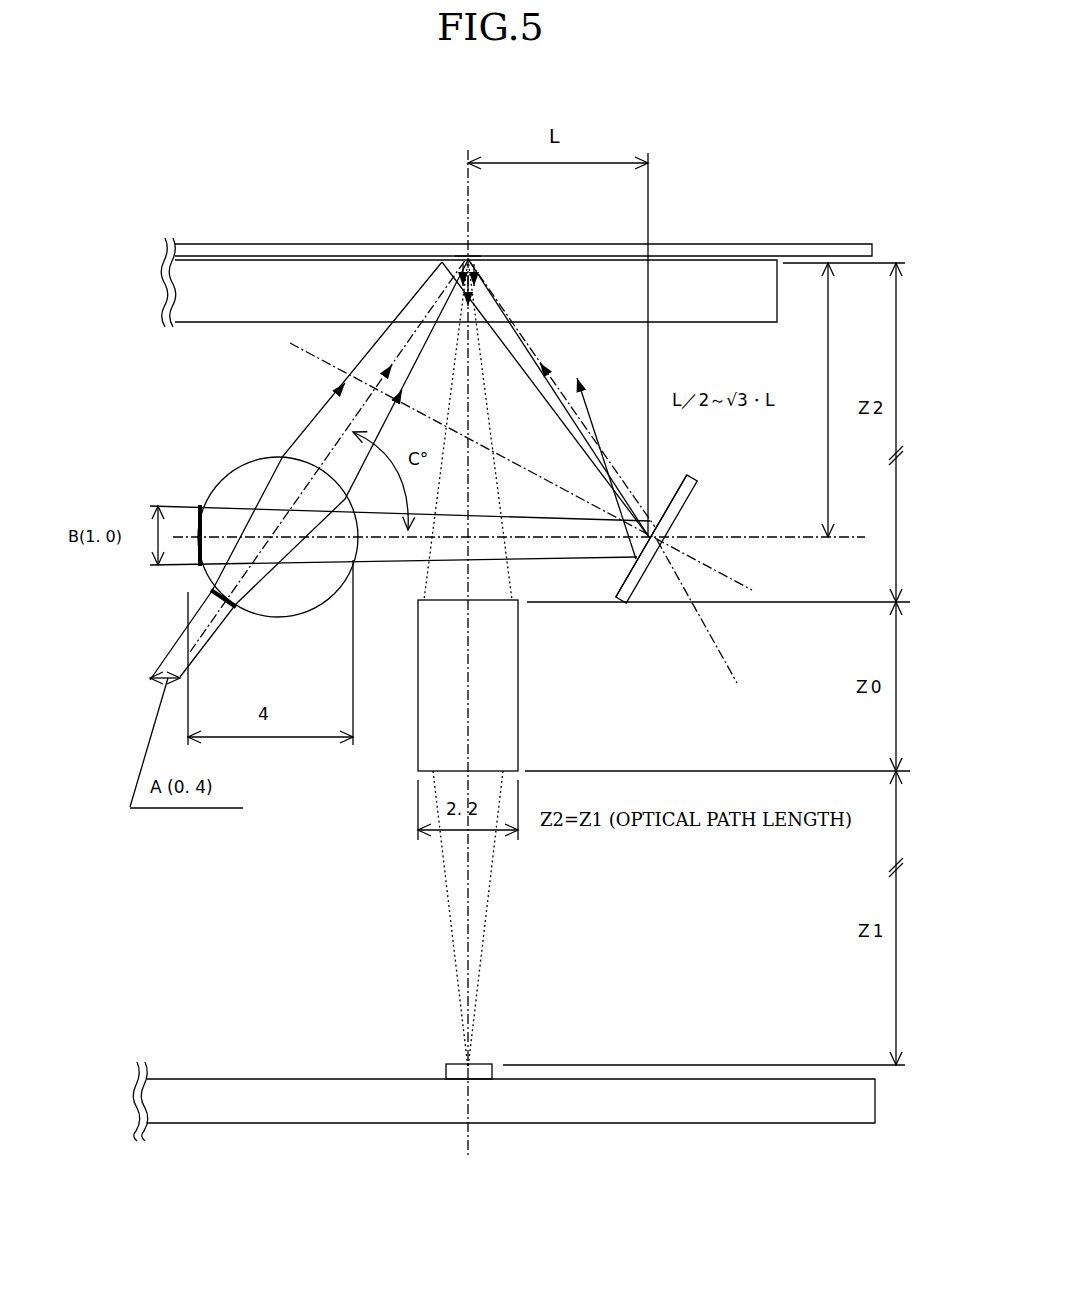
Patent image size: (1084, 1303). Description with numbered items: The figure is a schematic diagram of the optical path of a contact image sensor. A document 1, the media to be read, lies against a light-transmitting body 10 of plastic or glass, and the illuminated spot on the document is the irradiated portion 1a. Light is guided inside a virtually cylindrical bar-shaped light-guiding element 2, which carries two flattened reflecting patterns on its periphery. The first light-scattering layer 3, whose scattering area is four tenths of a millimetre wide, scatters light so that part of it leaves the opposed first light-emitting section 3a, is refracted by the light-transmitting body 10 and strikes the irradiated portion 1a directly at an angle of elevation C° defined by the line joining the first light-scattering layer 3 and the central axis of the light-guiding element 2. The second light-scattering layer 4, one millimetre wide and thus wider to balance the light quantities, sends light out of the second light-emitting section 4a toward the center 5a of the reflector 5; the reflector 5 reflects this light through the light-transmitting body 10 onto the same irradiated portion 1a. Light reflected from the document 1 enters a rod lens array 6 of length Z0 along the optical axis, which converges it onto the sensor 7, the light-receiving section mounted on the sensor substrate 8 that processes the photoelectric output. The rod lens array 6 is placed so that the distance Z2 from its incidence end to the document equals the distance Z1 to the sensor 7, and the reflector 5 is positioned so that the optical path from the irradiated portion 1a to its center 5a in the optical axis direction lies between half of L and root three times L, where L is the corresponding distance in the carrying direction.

The document 1 is at (763, 245).
The irradiated portion 1a is at (462, 257).
The light-transmitting body 10 is at (663, 282).
The light-guiding element 2 is at (260, 457).
The first light-scattering layer 3 is at (210, 598).
The first light-emitting section 3a is at (318, 470).
The second light-scattering layer 4 is at (193, 533).
The second light-emitting section 4a is at (357, 540).
The reflector 5 is at (642, 583).
The center of the reflector 5a is at (660, 547).
The rod lens array 6 is at (417, 727).
The sensor 7 is at (478, 1073).
The sensor substrate 8 is at (397, 1123).